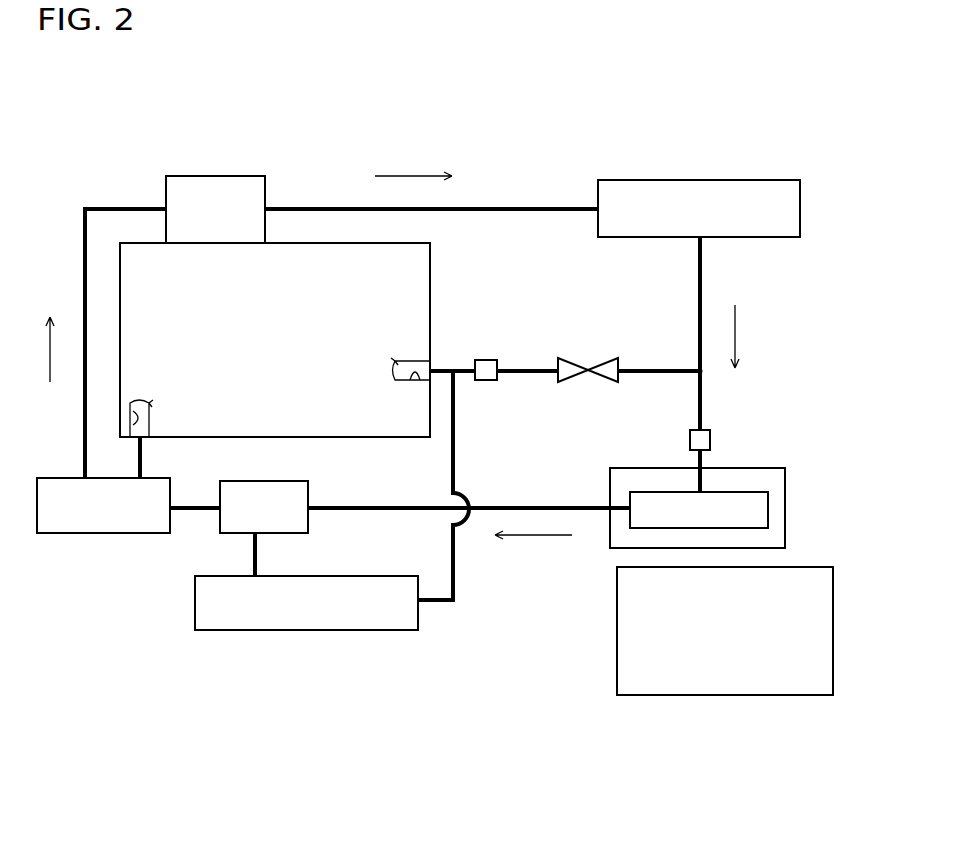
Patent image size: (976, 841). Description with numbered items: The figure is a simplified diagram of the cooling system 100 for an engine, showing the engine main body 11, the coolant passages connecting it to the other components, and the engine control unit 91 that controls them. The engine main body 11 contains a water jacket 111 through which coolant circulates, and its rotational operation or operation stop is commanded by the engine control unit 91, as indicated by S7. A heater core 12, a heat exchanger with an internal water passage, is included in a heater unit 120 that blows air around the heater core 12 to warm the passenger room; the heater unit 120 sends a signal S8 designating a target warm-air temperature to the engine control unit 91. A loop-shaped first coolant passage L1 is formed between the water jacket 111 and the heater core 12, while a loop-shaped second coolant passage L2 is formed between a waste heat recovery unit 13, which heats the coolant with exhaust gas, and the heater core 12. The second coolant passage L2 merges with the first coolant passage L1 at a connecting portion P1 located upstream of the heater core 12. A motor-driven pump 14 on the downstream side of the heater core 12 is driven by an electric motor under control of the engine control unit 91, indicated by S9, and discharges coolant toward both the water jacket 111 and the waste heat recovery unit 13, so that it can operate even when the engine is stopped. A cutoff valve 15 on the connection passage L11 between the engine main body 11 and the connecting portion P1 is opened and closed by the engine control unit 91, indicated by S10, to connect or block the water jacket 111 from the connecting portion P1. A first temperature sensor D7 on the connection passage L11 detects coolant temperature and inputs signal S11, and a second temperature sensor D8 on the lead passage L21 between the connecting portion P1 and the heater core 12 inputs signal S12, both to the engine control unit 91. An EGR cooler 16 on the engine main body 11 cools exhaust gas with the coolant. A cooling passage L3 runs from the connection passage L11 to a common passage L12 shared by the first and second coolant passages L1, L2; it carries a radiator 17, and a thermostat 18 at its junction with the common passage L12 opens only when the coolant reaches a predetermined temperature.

The cooling system 100 is at (481, 120).
The engine main body 11 is at (430, 248).
The water jacket 111 is at (130, 431).
The heater core 12 is at (638, 491).
The heater unit 120 is at (785, 487).
The waste heat recovery unit 13 is at (688, 180).
The motor-driven pump 14 is at (80, 533).
The cutoff valve 15 is at (615, 360).
The EGR cooler 16 is at (201, 176).
The radiator 17 is at (305, 630).
The thermostat 18 is at (308, 493).
The engine control unit 91 is at (722, 695).
The first coolant passage L1 is at (657, 369).
The second coolant passage L2 is at (530, 207).
The cooling passage L3 is at (453, 473).
The connection passage L11 is at (532, 369).
The common passage L12 is at (397, 507).
The lead passage L21 is at (700, 401).
The first temperature sensor D7 is at (485, 360).
The second temperature sensor D8 is at (690, 438).
The connecting portion P1 is at (702, 373).
The engine operation control signal S7 is at (432, 278).
The target warm air temperature signal S8 is at (785, 513).
The pump control signal S9 is at (113, 533).
The cutoff valve control signal S10 is at (567, 384).
The first temperature detection signal S11 is at (486, 380).
The second temperature detection signal S12 is at (710, 438).